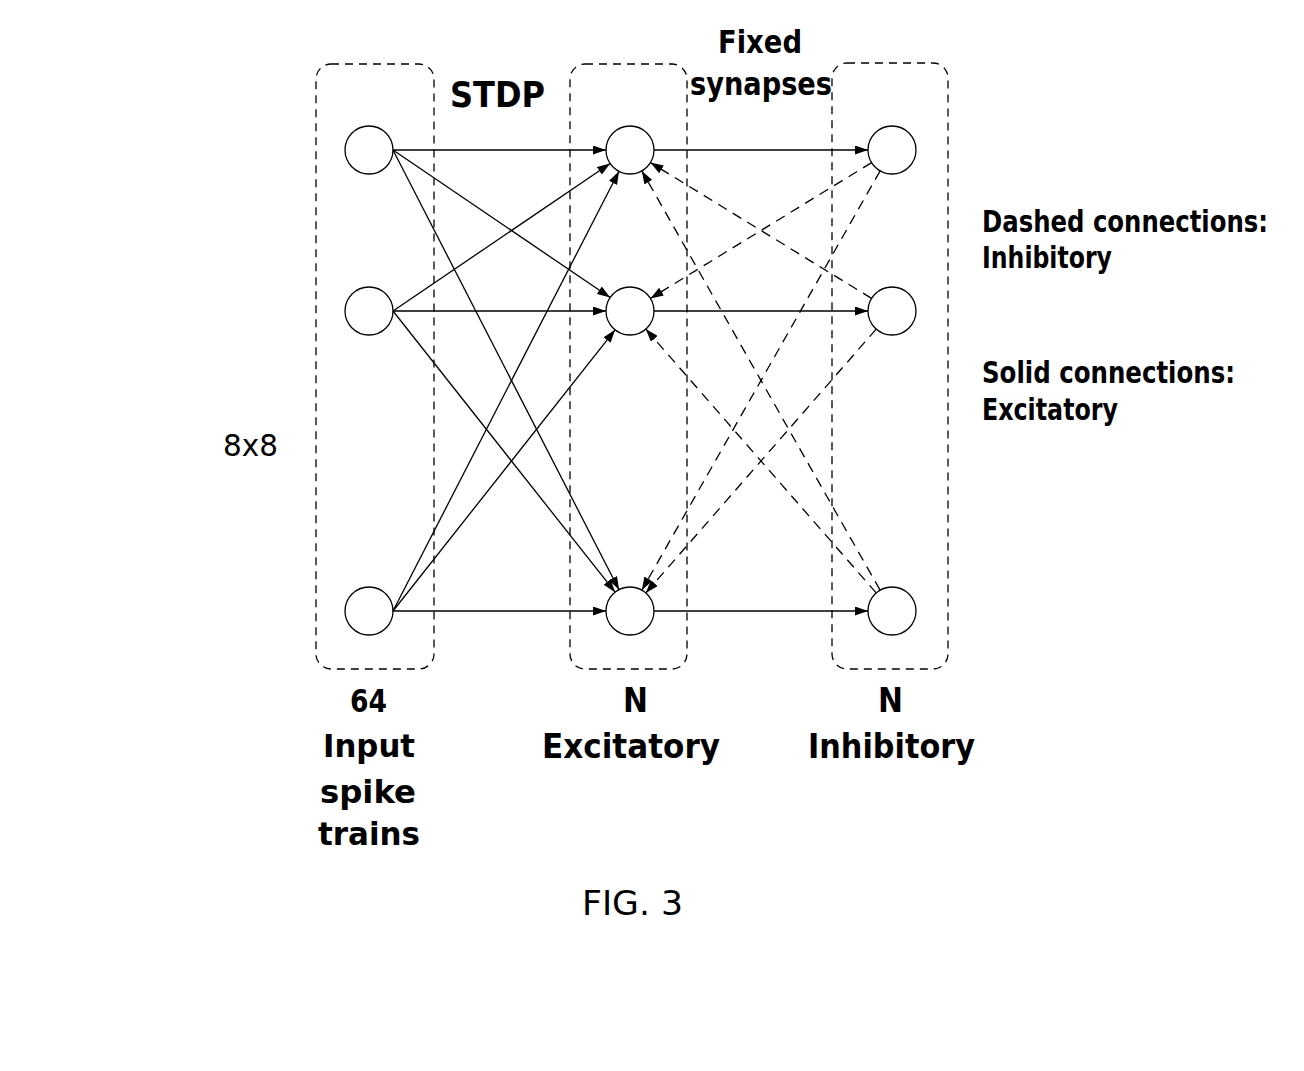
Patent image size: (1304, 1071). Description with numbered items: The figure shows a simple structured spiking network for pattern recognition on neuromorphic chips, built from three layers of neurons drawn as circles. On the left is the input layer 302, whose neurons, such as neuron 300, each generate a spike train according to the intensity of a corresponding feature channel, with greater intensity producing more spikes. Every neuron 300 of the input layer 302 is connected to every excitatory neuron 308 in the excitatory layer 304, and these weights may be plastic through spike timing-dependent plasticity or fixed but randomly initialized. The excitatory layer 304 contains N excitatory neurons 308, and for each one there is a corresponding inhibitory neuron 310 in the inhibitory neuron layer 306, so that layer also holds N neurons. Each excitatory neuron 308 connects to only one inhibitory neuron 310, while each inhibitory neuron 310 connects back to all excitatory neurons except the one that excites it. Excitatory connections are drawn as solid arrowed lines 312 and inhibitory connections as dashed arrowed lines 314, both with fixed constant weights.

The neuron 300 is at (358, 137).
The input layer 302 is at (328, 243).
The excitatory layer 304 is at (668, 648).
The inhibitory neuron layer 306 is at (923, 192).
The excitatory neuron 308 is at (632, 618).
The inhibitory neuron 310 is at (903, 613).
The solid arrowed lines 312 is at (453, 497).
The dashed arrowed lines 314 is at (837, 377).